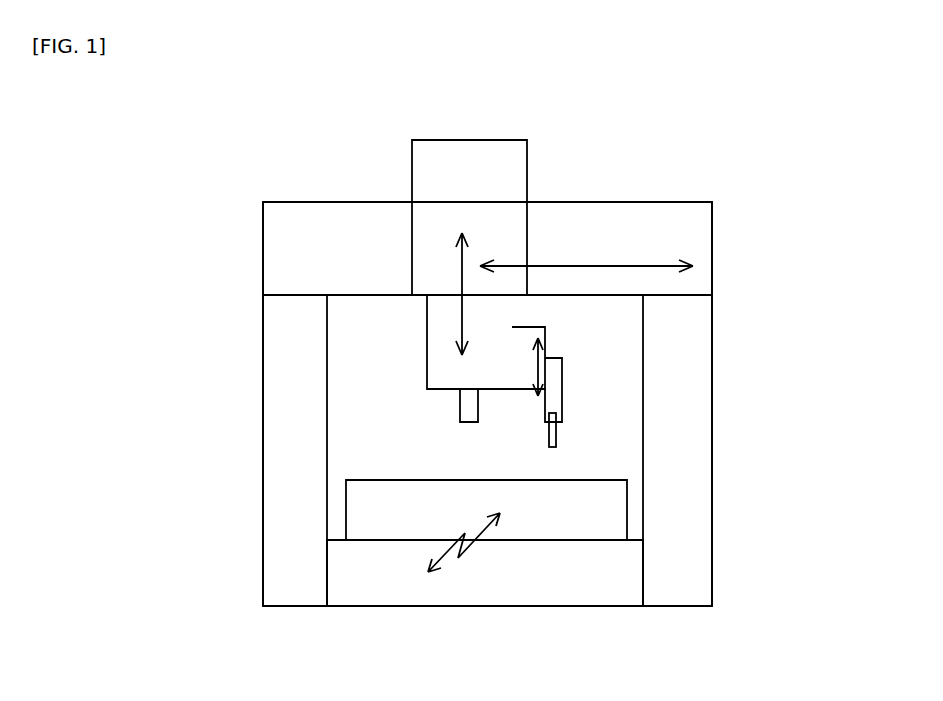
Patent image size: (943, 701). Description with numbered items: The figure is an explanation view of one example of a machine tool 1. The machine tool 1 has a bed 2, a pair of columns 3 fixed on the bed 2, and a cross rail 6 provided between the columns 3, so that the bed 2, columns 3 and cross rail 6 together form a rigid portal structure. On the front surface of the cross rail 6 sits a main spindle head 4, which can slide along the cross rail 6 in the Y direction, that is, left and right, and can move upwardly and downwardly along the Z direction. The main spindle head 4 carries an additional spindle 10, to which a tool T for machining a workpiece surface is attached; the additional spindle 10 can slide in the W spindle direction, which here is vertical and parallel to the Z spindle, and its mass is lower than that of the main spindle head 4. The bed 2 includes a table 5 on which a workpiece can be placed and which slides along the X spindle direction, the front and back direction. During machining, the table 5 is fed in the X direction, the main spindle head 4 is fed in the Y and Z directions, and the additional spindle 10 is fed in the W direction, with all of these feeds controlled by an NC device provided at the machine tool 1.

The machine tool 1 is at (698, 150).
The bed 2 is at (550, 597).
The column 3 is at (278, 403).
The main spindle head 4 is at (448, 312).
The table 5 is at (615, 512).
The cross rail 6 is at (700, 238).
The additional spindle 10 is at (553, 390).
The tool T is at (557, 440).
The X spindle direction X is at (464, 535).
The Y direction Y is at (586, 249).
The Z direction Z is at (475, 294).
The W spindle direction W is at (561, 355).